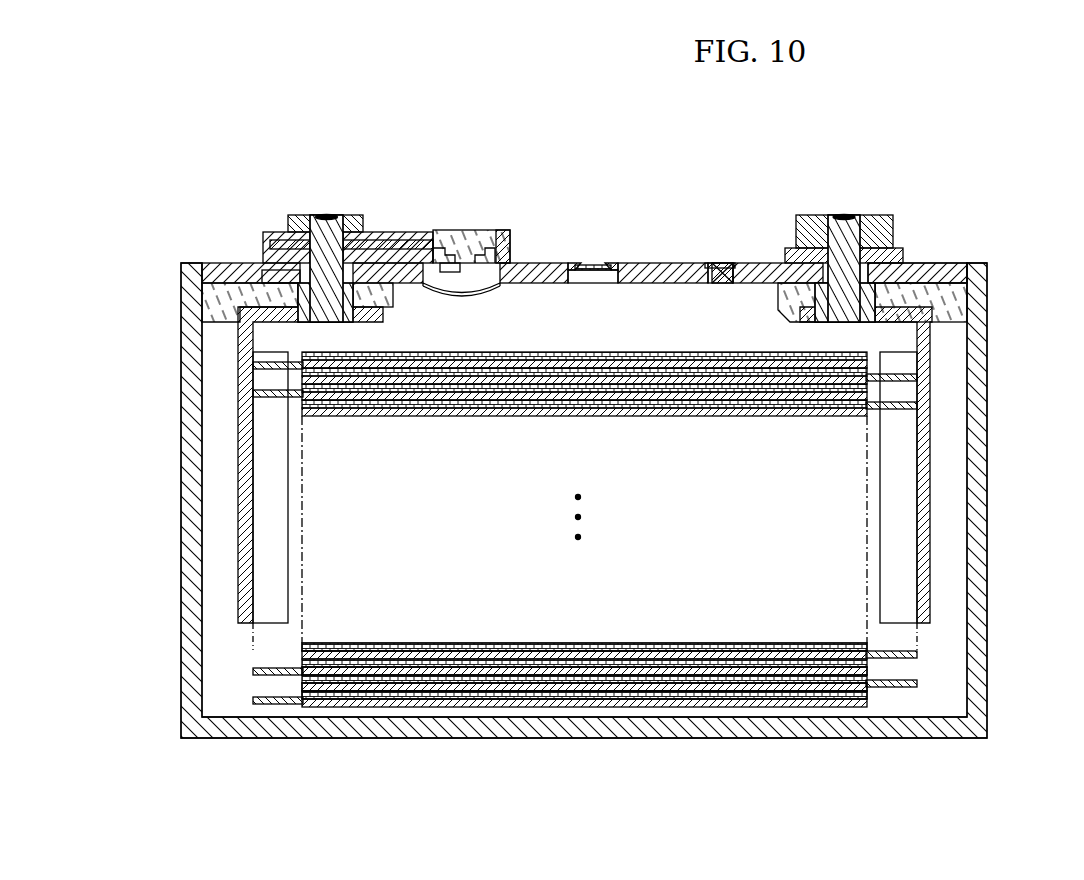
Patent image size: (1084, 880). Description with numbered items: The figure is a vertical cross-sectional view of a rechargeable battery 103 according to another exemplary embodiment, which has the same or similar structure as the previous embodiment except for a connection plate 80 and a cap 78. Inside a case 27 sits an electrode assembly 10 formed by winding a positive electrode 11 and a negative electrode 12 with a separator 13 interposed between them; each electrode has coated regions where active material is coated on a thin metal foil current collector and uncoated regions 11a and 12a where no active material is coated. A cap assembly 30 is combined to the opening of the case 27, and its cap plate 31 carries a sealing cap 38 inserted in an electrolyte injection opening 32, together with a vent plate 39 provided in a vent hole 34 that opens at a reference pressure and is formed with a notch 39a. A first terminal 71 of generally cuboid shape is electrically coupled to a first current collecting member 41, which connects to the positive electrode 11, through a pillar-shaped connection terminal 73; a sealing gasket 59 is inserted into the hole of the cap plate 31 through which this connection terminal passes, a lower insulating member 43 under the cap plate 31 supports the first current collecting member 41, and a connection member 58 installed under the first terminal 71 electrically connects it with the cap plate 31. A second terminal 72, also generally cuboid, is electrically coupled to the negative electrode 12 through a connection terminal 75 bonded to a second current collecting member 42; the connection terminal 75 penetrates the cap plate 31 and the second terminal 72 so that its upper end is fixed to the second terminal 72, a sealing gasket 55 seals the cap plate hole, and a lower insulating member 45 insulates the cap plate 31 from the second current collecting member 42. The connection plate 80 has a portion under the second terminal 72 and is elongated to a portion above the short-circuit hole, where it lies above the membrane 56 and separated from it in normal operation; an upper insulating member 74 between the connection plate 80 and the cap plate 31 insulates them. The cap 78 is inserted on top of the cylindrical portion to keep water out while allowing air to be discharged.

The rechargeable battery 103 is at (609, 112).
The electrode assembly 10 is at (680, 710).
The positive electrode 11 is at (770, 688).
The uncoated region 11a is at (895, 688).
The negative electrode 12 is at (390, 700).
The uncoated region 12a is at (268, 704).
The separator 13 is at (588, 676).
The case 27 is at (986, 530).
The cap assembly 30 is at (553, 256).
The cap plate 31 is at (952, 270).
The electrolyte injection opening 32 is at (722, 285).
The vent hole 34 is at (592, 285).
The sealing cap 38 is at (716, 264).
The vent plate 39 is at (614, 264).
The notch 39a is at (594, 265).
The first current collecting member 41 is at (932, 420).
The second current collecting member 42 is at (245, 375).
The lower insulating member 43 is at (952, 300).
The lower insulating member 45 is at (222, 298).
The sealing gasket 55 is at (262, 282).
The membrane 56 is at (466, 296).
The connection member 58 is at (905, 258).
The sealing gasket 59 is at (820, 300).
The first terminal 71 is at (878, 235).
The second terminal 72 is at (296, 216).
The connection terminal 73 is at (843, 222).
The upper insulating member 74 is at (504, 240).
The connection terminal 75 is at (330, 218).
The cap 78 is at (462, 240).
The connection plate 80 is at (398, 233).